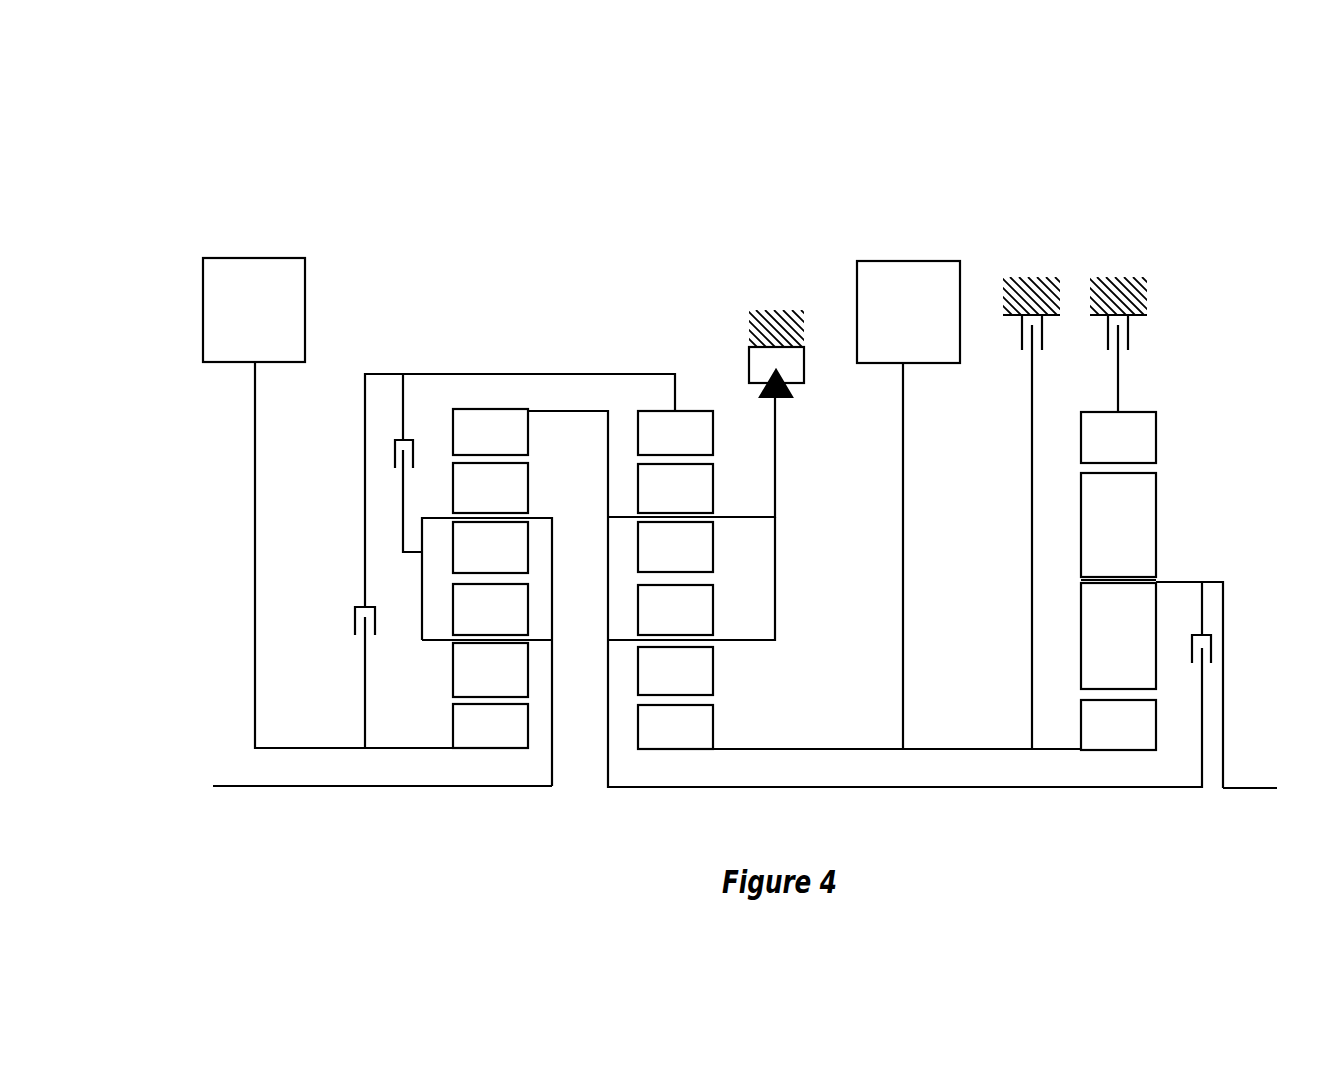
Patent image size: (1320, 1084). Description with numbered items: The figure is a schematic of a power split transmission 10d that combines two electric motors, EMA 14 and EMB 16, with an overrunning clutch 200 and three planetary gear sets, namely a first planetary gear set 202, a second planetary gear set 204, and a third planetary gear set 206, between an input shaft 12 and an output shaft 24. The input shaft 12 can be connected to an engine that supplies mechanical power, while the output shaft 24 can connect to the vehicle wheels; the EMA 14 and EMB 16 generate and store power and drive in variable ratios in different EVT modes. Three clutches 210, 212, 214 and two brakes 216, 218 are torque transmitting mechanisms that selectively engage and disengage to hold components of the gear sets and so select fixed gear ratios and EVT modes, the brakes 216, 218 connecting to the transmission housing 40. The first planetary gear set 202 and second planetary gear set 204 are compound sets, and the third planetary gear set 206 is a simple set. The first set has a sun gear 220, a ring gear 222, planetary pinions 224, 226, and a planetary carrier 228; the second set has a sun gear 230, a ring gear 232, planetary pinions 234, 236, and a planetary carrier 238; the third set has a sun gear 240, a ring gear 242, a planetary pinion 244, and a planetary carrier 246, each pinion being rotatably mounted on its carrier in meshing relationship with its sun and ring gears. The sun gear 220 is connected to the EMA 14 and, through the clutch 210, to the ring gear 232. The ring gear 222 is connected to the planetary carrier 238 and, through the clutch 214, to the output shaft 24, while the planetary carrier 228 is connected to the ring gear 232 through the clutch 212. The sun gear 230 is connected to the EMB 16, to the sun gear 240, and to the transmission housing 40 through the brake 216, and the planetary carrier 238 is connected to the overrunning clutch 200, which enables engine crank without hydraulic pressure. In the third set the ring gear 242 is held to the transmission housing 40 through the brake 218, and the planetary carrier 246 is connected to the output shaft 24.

The power split transmission 10d is at (783, 148).
The input shaft 12 is at (250, 786).
The EMA 14 is at (262, 258).
The EMB 16 is at (908, 260).
The output shaft 24 is at (1243, 788).
The transmission housing 40 is at (1033, 265).
The overrunning clutch 200 is at (804, 378).
The first planetary gear set 202 is at (753, 524).
The second planetary gear set 204 is at (844, 505).
The third planetary gear set 206 is at (1171, 556).
The clutch 210 is at (347, 628).
The clutch 212 is at (425, 452).
The clutch 214 is at (1192, 668).
The brake 216 is at (997, 337).
The brake 218 is at (1148, 337).
The sun gear 220 is at (452, 727).
The ring gear 222 is at (493, 410).
The planetary pinion 224 is at (452, 667).
The planetary pinion 226 is at (528, 506).
The planetary carrier 228 is at (422, 591).
The sun gear 230 is at (713, 742).
The ring gear 232 is at (690, 410).
The planetary pinion 234 is at (713, 657).
The planetary pinion 236 is at (713, 487).
The planetary carrier 238 is at (775, 563).
The sun gear 240 is at (1117, 752).
The ring gear 242 is at (1156, 437).
The planetary pinion 244 is at (1156, 507).
The planetary carrier 246 is at (1213, 582).